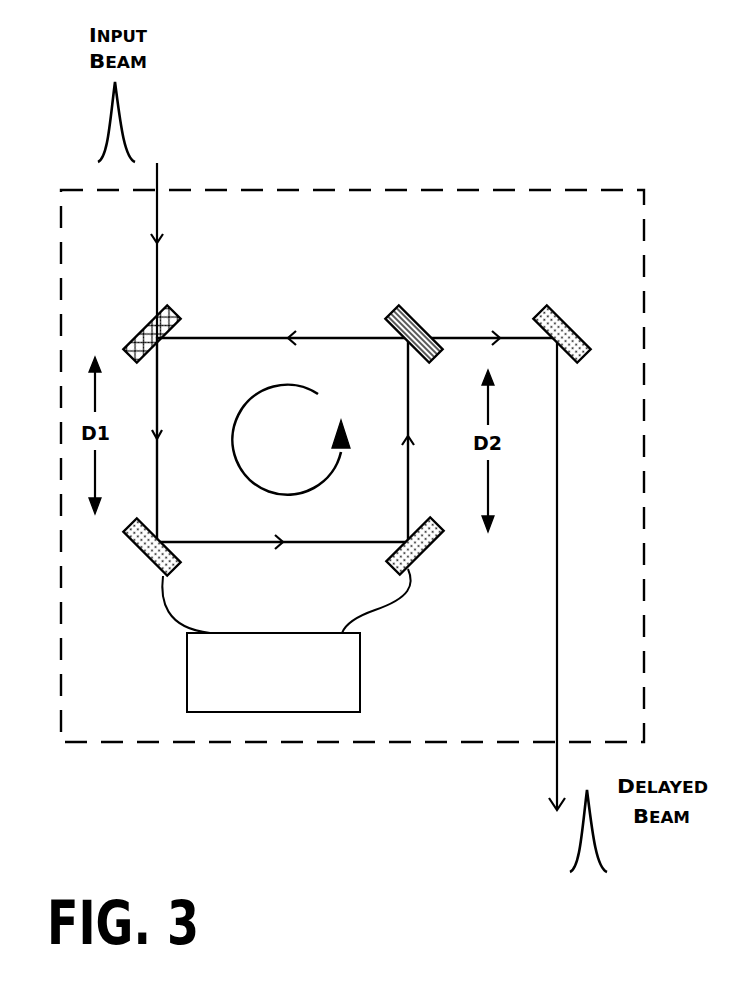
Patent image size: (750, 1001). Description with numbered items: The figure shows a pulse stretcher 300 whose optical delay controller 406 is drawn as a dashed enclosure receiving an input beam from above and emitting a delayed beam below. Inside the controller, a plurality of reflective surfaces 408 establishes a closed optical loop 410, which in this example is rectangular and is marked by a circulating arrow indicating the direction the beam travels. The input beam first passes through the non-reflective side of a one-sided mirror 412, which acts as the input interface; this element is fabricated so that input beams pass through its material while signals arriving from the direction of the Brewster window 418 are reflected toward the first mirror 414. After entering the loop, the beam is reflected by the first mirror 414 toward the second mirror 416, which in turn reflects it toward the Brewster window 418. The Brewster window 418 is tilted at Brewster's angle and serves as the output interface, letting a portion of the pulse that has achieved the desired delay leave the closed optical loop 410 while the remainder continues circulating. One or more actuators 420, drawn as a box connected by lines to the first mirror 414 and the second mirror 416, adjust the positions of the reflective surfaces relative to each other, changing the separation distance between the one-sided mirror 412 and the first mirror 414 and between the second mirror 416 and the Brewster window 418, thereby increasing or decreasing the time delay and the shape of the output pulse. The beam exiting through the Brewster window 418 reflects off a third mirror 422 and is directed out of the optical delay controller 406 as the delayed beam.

The pulse stretcher 300 is at (647, 93).
The optical delay controller 406 is at (373, 190).
The plurality of reflective surfaces 408 is at (420, 312).
The closed optical loop 410 is at (262, 485).
The one-sided mirror 412 is at (177, 313).
The first mirror 414 is at (179, 553).
The second mirror 416 is at (431, 512).
The Brewster window 418 is at (406, 304).
The actuators 420 is at (286, 640).
The third mirror 422 is at (568, 312).